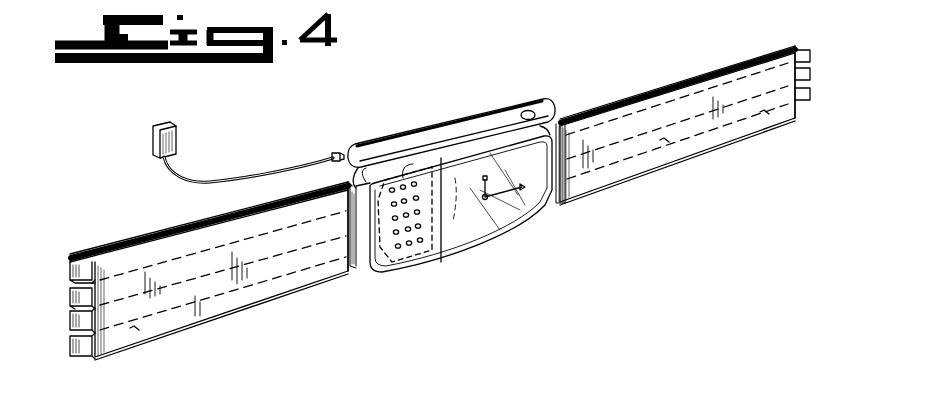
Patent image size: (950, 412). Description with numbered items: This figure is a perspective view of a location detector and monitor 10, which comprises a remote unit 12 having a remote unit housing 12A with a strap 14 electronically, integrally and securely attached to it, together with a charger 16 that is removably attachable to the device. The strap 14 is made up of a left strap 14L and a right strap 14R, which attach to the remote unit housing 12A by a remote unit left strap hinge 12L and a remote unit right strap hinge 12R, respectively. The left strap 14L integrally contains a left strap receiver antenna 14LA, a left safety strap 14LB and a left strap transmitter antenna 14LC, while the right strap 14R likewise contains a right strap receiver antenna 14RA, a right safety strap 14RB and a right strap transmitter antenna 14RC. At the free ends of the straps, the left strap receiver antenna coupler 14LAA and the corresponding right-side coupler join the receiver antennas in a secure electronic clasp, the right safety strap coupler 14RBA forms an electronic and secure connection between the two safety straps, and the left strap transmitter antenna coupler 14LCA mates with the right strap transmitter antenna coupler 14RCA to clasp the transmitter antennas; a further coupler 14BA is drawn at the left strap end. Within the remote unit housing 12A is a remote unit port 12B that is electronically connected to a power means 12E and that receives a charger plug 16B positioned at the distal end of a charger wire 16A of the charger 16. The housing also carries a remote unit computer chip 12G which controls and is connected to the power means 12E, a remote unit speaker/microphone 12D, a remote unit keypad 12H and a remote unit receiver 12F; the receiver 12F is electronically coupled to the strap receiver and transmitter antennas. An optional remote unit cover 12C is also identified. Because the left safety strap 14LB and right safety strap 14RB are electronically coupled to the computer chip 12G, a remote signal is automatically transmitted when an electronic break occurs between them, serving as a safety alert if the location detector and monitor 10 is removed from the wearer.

The location detector and monitor 10 is at (446, 42).
The remote unit 12 is at (478, 106).
The remote unit housing 12A is at (441, 116).
The remote unit port 12B is at (352, 146).
The remote unit cover 12C is at (498, 106).
The remote unit speaker/microphone 12D is at (550, 73).
The power means 12E is at (380, 158).
The remote unit receiver 12F is at (408, 162).
The remote unit computer chip 12G is at (430, 250).
The remote unit keypad 12H is at (378, 270).
The remote unit left strap hinge 12L is at (342, 178).
The remote unit right strap hinge 12R is at (552, 113).
The strap 14 is at (152, 243).
The band tab 14BA is at (80, 308).
The left strap 14L is at (262, 208).
The left strap receiver antenna 14LA is at (191, 233).
The left strap receiver antenna coupler 14LAA is at (82, 256).
The left safety strap 14LB is at (200, 315).
The left strap transmitter antenna 14LC is at (134, 340).
The left strap transmitter antenna coupler 14LCA is at (74, 340).
The right strap 14R is at (603, 100).
The right strap receiver antenna 14RA is at (690, 82).
The right safety strap 14RB is at (668, 170).
The right safety strap coupler 14RBA is at (805, 73).
The right strap transmitter antenna 14RC is at (768, 110).
The right strap transmitter antenna coupler 14RCA is at (808, 92).
The charger 16 is at (172, 136).
The charger wire 16A is at (260, 160).
The charger plug 16B is at (333, 150).